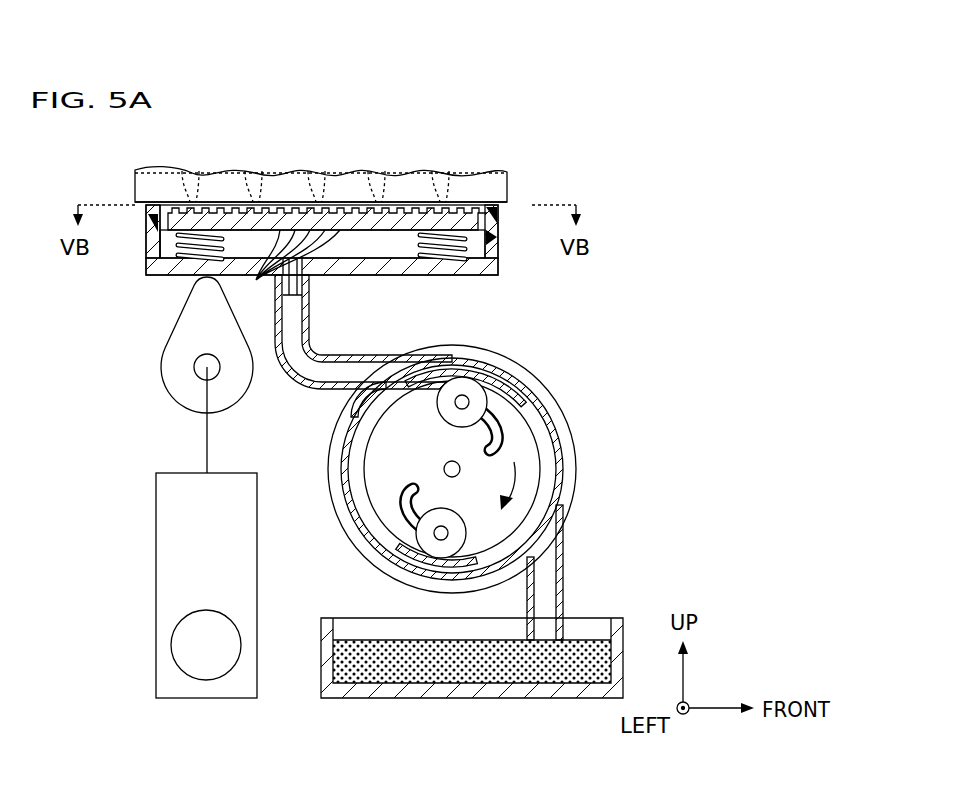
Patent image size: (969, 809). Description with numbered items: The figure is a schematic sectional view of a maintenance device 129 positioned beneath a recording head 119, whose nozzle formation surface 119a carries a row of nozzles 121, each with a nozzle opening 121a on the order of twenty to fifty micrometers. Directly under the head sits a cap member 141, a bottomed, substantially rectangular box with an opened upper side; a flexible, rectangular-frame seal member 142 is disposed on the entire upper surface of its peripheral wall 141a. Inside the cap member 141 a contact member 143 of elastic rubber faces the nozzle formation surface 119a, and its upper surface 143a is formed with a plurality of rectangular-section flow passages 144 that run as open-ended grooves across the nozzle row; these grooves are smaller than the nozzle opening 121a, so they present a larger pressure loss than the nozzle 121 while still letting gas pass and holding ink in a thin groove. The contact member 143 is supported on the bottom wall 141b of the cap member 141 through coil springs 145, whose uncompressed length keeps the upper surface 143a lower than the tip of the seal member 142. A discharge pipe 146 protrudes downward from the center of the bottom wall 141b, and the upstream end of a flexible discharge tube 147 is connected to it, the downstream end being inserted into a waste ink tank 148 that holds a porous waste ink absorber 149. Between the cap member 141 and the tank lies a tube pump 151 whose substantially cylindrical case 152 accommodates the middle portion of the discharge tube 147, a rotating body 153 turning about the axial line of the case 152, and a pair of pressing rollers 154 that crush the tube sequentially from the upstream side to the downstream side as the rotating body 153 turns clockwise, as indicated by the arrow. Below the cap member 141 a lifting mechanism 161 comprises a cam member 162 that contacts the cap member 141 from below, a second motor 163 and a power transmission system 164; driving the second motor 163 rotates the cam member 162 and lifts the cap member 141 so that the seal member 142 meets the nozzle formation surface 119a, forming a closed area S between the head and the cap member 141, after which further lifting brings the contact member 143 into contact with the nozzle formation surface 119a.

The recording head 119 is at (505, 175).
The nozzle formation surface 119a is at (497, 198).
The nozzle 121 is at (451, 170).
The nozzle opening 121a is at (439, 171).
The maintenance device 129 is at (625, 310).
The cap member 141 is at (488, 276).
The peripheral wall 141a is at (498, 256).
The bottom wall 141b is at (432, 276).
The seal member 142 is at (494, 220).
The contact member 143 is at (401, 232).
The upper surface 143a is at (160, 216).
The flow passage 144 is at (256, 280).
The coil spring 145 is at (178, 243).
The discharge pipe 146 is at (304, 288).
The discharge tube 147 is at (330, 395).
The waste ink tank 148 is at (537, 698).
The waste ink absorber 149 is at (369, 648).
The tube pump 151 is at (595, 432).
The case 152 is at (577, 470).
The rotating body 153 is at (380, 487).
The pressing roller 154 is at (442, 415).
The lifting mechanism 161 is at (135, 500).
The cam member 162 is at (175, 377).
The second motor 163 is at (172, 641).
The power transmission system 164 is at (156, 582).
The closed area S is at (372, 246).